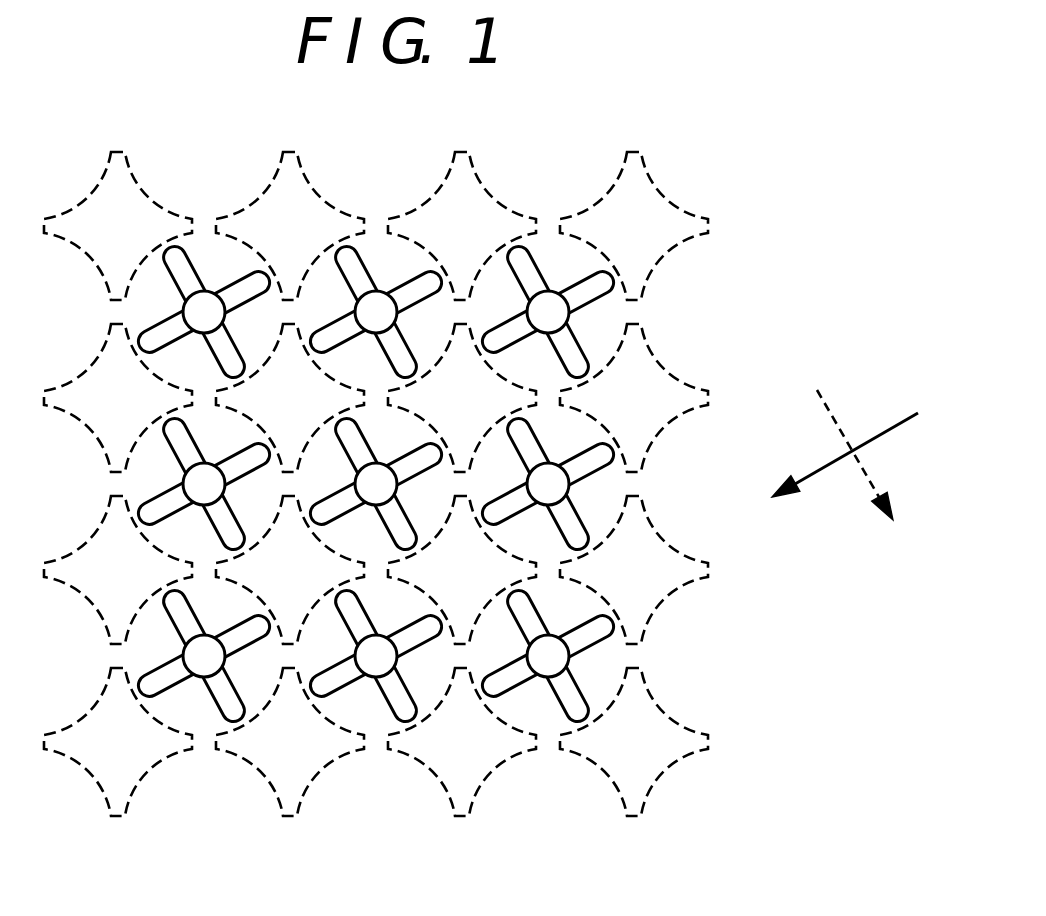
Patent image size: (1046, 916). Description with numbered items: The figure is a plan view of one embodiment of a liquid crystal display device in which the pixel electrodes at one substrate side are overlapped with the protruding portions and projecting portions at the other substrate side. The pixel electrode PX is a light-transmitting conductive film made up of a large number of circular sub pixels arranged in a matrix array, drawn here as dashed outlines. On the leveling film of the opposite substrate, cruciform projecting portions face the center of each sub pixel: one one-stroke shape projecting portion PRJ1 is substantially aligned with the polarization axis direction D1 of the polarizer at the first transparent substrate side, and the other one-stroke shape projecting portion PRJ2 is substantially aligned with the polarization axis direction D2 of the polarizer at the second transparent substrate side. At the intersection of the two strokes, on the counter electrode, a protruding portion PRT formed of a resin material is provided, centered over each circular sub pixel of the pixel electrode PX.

The pixel electrode PX is at (618, 788).
The protruding portion PRT is at (551, 309).
The one-stroke shape projecting portion PRJ1 is at (598, 297).
The one-stroke shape projecting portion PRJ2 is at (580, 355).
The polarization axis direction D1 is at (845, 438).
The polarization axis direction D2 is at (836, 455).